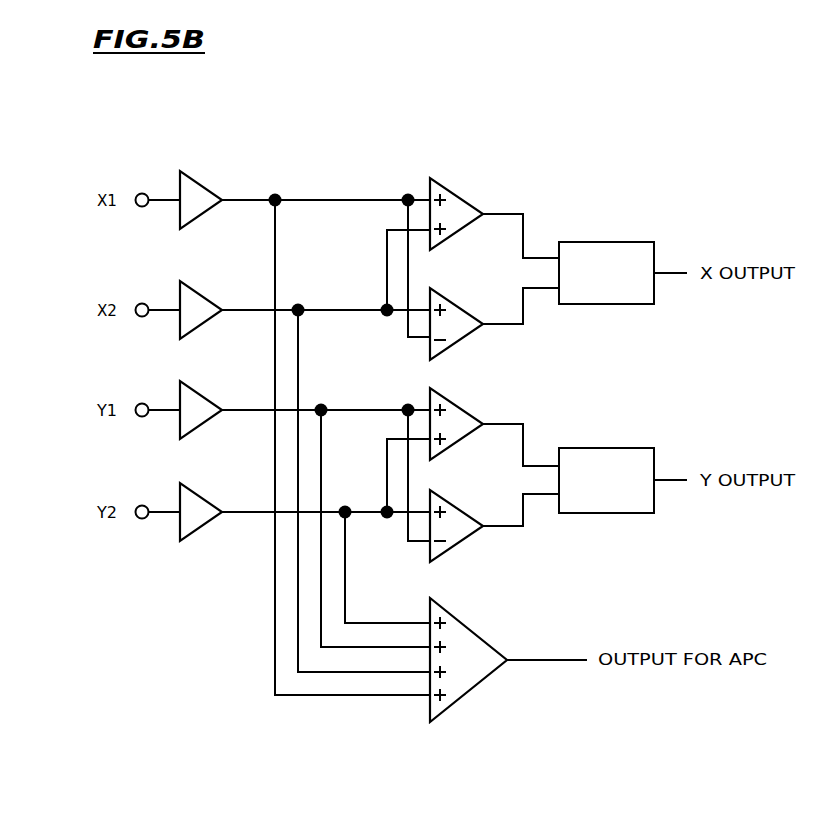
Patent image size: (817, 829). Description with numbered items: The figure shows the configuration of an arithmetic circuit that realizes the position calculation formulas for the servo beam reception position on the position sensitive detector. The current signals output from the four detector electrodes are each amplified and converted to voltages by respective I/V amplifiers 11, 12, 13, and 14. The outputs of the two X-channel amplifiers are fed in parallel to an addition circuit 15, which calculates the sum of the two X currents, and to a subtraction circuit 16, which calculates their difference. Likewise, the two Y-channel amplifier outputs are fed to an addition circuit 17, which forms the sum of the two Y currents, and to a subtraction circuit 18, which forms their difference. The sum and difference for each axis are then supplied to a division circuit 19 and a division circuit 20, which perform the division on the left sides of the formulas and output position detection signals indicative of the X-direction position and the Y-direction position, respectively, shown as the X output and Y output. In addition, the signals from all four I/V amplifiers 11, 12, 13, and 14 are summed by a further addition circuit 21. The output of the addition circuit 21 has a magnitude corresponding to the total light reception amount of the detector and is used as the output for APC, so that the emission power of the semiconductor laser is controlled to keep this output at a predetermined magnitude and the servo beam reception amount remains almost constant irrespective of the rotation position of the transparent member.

The I/V amplifier 11 is at (198, 197).
The I/V amplifier 12 is at (198, 305).
The I/V amplifier 13 is at (198, 406).
The I/V amplifier 14 is at (198, 507).
The addition circuit 15 is at (462, 205).
The subtraction circuit 16 is at (462, 315).
The addition circuit 17 is at (462, 415).
The subtraction circuit 18 is at (462, 515).
The division circuit 19 is at (623, 240).
The division circuit 20 is at (623, 446).
The addition circuit 21 is at (481, 636).